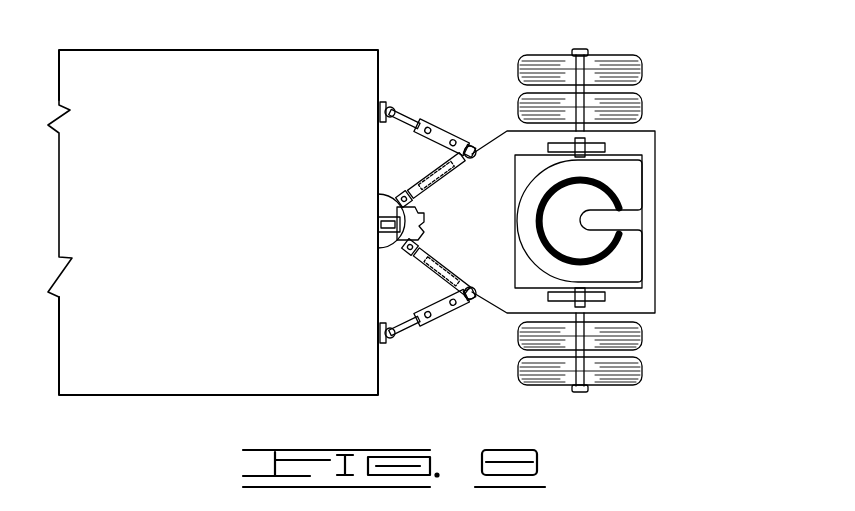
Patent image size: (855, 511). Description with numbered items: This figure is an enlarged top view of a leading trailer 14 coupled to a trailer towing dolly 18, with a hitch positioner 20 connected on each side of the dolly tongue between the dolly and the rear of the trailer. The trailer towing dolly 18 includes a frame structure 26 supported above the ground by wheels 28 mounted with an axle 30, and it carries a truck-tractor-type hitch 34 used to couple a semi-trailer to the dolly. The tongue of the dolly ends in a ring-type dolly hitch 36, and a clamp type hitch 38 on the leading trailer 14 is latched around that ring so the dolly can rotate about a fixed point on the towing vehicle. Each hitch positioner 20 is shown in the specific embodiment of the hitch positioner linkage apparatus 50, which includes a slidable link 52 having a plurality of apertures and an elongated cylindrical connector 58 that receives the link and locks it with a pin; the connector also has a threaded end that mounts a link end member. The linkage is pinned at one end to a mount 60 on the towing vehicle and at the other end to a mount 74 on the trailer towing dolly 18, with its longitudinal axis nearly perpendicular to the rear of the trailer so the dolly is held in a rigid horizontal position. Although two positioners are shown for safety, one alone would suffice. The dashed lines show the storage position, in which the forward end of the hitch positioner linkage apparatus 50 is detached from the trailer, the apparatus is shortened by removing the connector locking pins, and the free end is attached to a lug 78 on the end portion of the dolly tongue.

The leading trailer 14 is at (235, 46).
The trailer towing dolly 18 is at (700, 198).
The hitch positioner 20 is at (455, 58).
The frame structure 26 is at (645, 140).
The wheels 28 is at (642, 100).
The axle 30 is at (582, 50).
The hitch 34 is at (640, 268).
The dolly hitch 36 is at (378, 188).
The clamp type hitch 38 is at (378, 243).
The hitch positioner linkage apparatus 50 is at (440, 126).
The slidable link 52 is at (412, 118).
The connector 58 is at (455, 138).
The mount 60 is at (388, 106).
The mount 74 is at (470, 152).
The lug 78 is at (424, 218).